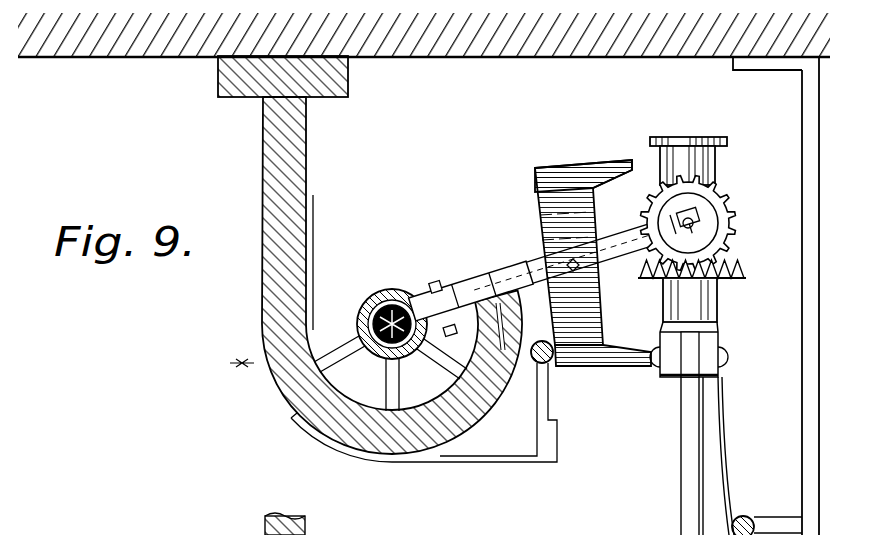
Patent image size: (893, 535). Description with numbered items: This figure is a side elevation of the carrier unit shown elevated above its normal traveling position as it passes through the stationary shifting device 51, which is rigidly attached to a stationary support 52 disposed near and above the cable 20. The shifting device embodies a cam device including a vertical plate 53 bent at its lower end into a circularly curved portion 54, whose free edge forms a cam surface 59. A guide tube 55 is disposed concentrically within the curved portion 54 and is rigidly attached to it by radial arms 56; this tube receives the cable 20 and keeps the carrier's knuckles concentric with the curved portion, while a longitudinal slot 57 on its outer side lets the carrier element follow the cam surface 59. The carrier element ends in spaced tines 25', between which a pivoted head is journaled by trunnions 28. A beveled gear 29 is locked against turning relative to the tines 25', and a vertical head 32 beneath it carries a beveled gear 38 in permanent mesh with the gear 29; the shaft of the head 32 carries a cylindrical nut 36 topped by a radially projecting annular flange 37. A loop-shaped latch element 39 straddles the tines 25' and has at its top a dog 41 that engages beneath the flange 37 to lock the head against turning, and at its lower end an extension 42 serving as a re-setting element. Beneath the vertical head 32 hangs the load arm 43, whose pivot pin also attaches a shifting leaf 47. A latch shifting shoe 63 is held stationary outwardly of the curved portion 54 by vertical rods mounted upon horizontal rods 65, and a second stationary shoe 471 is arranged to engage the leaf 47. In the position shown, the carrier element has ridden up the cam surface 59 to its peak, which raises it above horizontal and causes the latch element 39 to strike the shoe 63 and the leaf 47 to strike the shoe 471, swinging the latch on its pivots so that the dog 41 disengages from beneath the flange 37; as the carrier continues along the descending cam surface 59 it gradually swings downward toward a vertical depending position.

The cable 20 is at (364, 319).
The tines 25' is at (551, 253).
The trunnions 28 is at (716, 226).
The beveled gear 29 is at (736, 209).
The vertical head 32 is at (705, 303).
The cylindrical nut 36 is at (718, 167).
The annular flange 37 is at (722, 138).
The beveled gear 38 is at (736, 270).
The latch element 39 is at (548, 227).
The dog 41 is at (613, 172).
The extension 42 is at (636, 368).
The load arm 43 is at (681, 523).
The shifting leaf 47 is at (724, 441).
The second stationary shoe 471 is at (746, 516).
The shifting device 51 is at (219, 373).
The stationary support 52 is at (552, 58).
The vertical plate 53 is at (297, 166).
The circularly curved portion 54 is at (460, 403).
The guide tube 55 is at (383, 301).
The radial arms 56 is at (390, 380).
The longitudinal slot 57 is at (416, 296).
The cam surface 59 is at (508, 367).
The latch shifting shoe 63 is at (548, 361).
The horizontal rods 65 is at (503, 463).